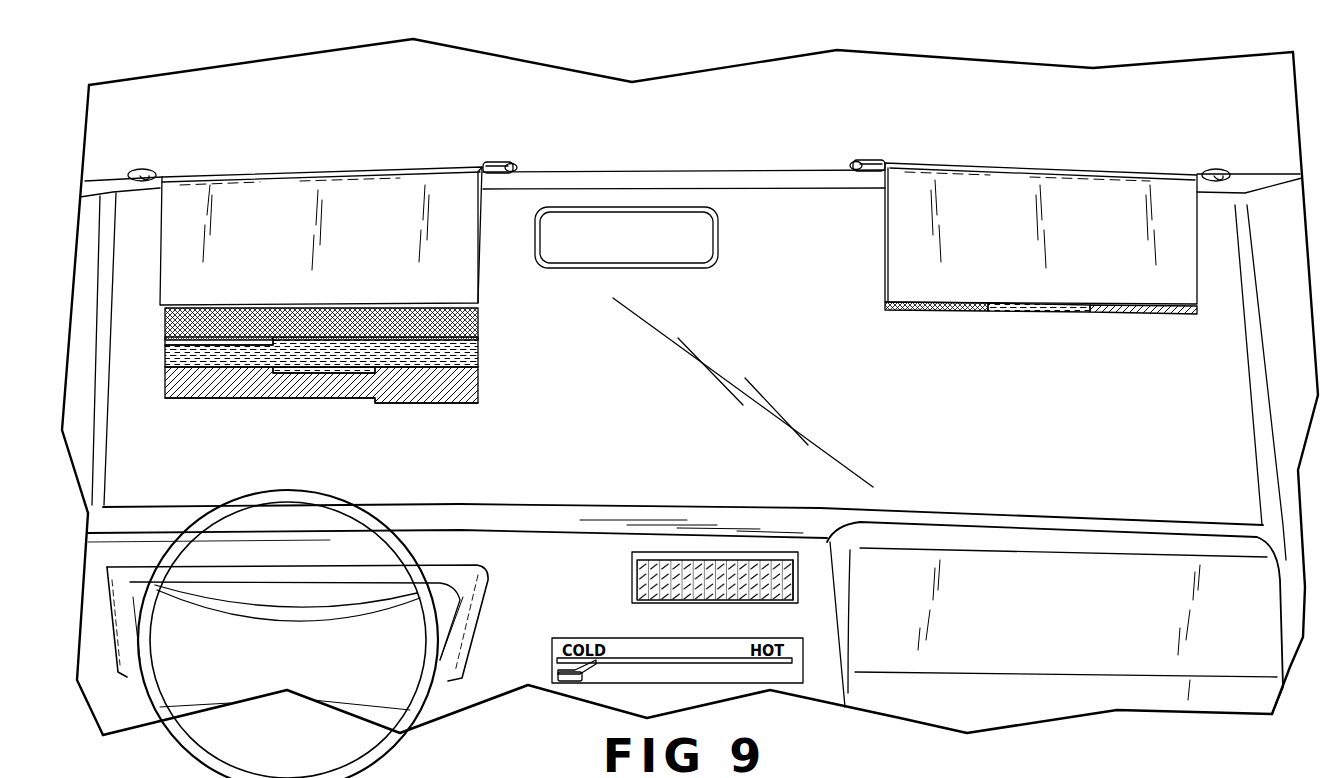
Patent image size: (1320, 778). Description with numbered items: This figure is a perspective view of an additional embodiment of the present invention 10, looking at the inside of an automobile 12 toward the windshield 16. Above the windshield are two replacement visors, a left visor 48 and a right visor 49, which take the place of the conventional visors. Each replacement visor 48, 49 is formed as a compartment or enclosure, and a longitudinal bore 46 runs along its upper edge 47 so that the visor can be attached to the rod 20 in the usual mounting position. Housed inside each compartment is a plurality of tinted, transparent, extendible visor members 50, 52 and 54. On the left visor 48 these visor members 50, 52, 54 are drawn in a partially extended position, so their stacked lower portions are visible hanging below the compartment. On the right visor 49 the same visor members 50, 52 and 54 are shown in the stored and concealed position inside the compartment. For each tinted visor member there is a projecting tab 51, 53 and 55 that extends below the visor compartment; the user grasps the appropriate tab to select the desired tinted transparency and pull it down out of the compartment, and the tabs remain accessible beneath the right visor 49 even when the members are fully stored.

The additional embodiment of the present invention 10 is at (535, 320).
The automobile 12 is at (733, 87).
The windshield 16 is at (988, 214).
The rod 20 is at (143, 178).
The longitudinal bore 46 is at (485, 165).
The upper edge 47 is at (407, 168).
The left visor 48 is at (352, 259).
The right visor 49 is at (983, 200).
The extendible visor member 50 is at (472, 393).
The projecting tab 51 is at (425, 402).
The extendible visor member 52 is at (472, 350).
The projecting tab 53 is at (325, 370).
The extendible visor member 54 is at (480, 322).
The projecting tab 55 is at (207, 343).